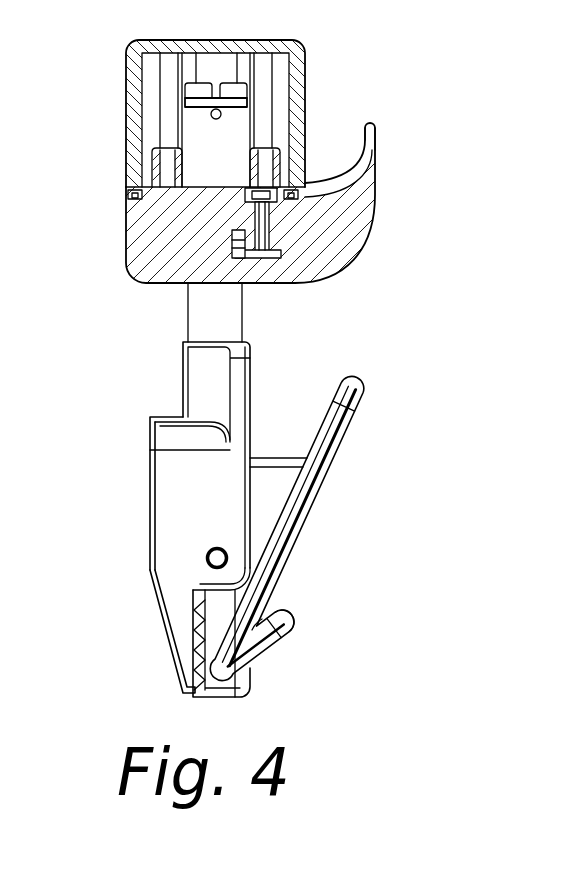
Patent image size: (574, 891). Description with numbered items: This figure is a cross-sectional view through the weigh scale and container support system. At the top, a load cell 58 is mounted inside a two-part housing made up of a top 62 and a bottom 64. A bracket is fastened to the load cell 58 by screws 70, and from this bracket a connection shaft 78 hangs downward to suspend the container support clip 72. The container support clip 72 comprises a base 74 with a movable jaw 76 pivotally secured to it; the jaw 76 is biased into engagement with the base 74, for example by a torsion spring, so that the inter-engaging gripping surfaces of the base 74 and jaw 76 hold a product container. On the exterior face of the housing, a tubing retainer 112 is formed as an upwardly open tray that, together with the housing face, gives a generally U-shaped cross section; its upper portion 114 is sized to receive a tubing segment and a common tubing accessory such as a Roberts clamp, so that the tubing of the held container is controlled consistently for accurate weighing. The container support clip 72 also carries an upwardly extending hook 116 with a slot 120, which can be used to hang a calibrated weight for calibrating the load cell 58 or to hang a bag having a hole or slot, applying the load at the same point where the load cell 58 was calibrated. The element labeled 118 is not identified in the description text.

The load cell 58 is at (200, 135).
The top 62 is at (268, 42).
The bottom 64 is at (140, 272).
The screws 70 is at (252, 218).
The container support clip 72 is at (140, 343).
The base 74 is at (223, 468).
The movable jaw 76 is at (278, 487).
The connection shaft 78 is at (236, 304).
The tubing retainer 112 is at (368, 200).
The upper portion 114 is at (378, 118).
The hook 116 is at (293, 620).
The short lever segment 118 is at (288, 638).
The slot 120 is at (265, 612).